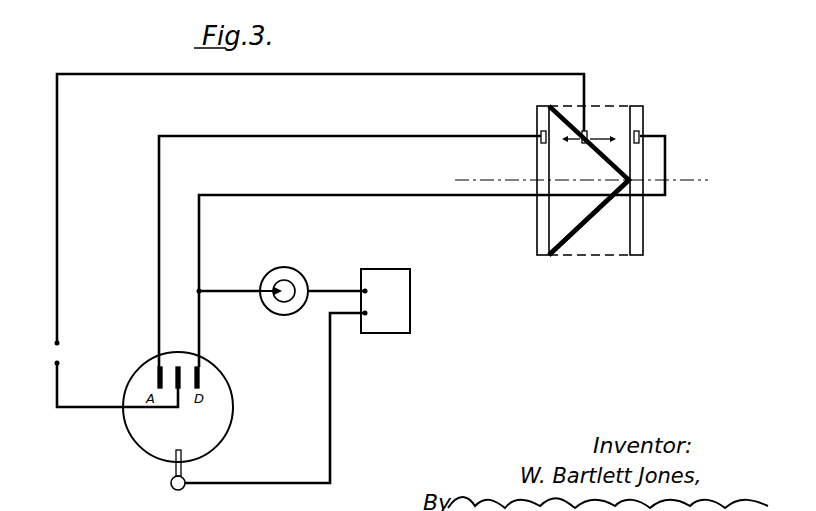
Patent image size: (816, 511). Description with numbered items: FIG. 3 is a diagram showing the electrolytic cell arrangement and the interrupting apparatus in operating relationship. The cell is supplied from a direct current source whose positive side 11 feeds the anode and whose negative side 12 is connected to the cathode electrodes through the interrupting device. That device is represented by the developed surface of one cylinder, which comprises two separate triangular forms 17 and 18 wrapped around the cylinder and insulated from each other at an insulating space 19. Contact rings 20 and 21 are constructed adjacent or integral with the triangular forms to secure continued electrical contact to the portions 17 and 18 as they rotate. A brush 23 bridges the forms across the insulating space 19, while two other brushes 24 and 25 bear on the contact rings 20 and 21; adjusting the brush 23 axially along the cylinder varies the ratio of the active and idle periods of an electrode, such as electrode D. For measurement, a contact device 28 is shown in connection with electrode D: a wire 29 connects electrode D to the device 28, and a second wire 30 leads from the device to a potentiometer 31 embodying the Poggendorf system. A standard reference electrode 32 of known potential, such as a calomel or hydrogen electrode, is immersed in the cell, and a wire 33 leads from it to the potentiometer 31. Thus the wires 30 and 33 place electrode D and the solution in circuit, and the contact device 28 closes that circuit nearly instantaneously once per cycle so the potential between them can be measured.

The positive side of direct current source 11 is at (45, 376).
The negative side of direct current source 12 is at (62, 343).
The triangular form 17 is at (589, 180).
The triangular form 18 is at (590, 180).
The insulating space 19 is at (574, 240).
The contact ring 20 is at (540, 161).
The contact ring 21 is at (643, 229).
The brush 23 is at (588, 136).
The brush 24 is at (540, 133).
The brush 25 is at (645, 133).
The contact device 28 is at (264, 276).
The wire 29 is at (229, 290).
The second wire 30 is at (334, 290).
The potentiometer 31 is at (385, 301).
The standard reference electrode 32 is at (171, 485).
The wire 33 is at (285, 480).